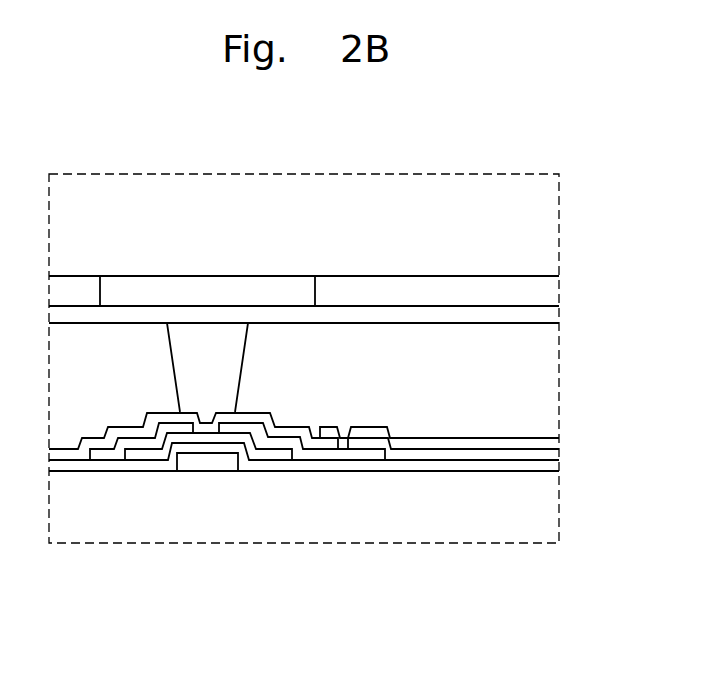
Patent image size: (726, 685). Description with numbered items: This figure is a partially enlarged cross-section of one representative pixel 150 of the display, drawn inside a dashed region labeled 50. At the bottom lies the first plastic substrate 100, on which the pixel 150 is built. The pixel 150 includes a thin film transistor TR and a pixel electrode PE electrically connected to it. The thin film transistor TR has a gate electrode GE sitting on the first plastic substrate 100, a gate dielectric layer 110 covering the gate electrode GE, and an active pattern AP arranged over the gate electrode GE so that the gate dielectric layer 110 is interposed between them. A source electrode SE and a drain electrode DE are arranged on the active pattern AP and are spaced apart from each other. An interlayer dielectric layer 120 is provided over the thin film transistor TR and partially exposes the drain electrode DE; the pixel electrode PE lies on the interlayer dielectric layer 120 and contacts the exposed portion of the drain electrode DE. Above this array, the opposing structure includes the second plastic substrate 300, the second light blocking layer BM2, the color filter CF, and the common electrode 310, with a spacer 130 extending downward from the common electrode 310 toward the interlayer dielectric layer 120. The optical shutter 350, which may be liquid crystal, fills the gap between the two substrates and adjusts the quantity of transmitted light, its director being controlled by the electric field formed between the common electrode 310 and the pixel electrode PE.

The display panel 50 is at (566, 135).
The second plastic substrate 300 is at (548, 214).
The second light blocking layer BM2 is at (262, 288).
The color filter CF is at (548, 290).
The common electrode 310 is at (548, 316).
The spacer 130 is at (237, 355).
The optical shutter 350 is at (548, 368).
The interlayer dielectric layer 120 is at (550, 448).
The gate dielectric layer 110 is at (550, 458).
The first plastic substrate 100 is at (548, 518).
The pixel 150 is at (357, 628).
The thin film transistor TR is at (288, 591).
The gate electrode GE is at (207, 462).
The active pattern AP is at (150, 455).
The source electrode SE is at (107, 455).
The drain electrode DE is at (270, 442).
The pixel electrode PE is at (343, 445).